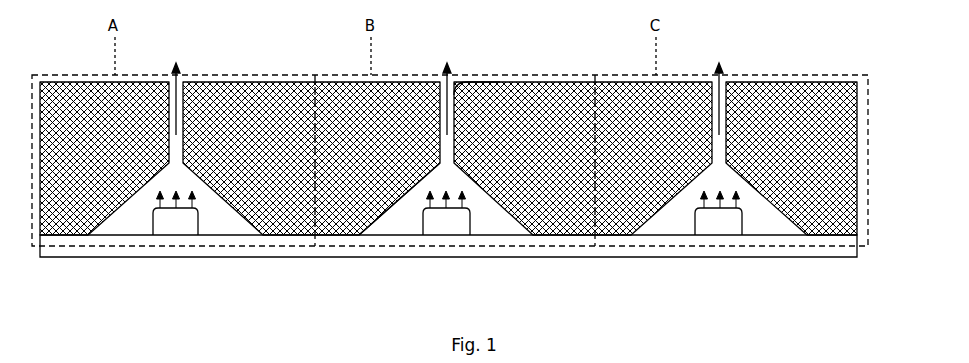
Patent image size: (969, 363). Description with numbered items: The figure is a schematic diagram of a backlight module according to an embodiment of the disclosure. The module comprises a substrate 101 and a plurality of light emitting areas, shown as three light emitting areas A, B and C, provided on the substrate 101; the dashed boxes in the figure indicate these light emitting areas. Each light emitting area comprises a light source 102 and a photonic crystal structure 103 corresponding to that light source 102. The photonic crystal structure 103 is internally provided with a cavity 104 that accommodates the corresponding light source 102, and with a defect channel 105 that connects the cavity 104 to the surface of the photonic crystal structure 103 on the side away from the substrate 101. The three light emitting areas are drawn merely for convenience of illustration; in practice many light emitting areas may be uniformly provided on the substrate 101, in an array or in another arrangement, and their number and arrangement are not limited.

The substrate 101 is at (833, 247).
The light source 102 is at (472, 222).
The photonic crystal structure 103 is at (557, 92).
The cavity 104 is at (395, 227).
The defect channel 105 is at (463, 81).